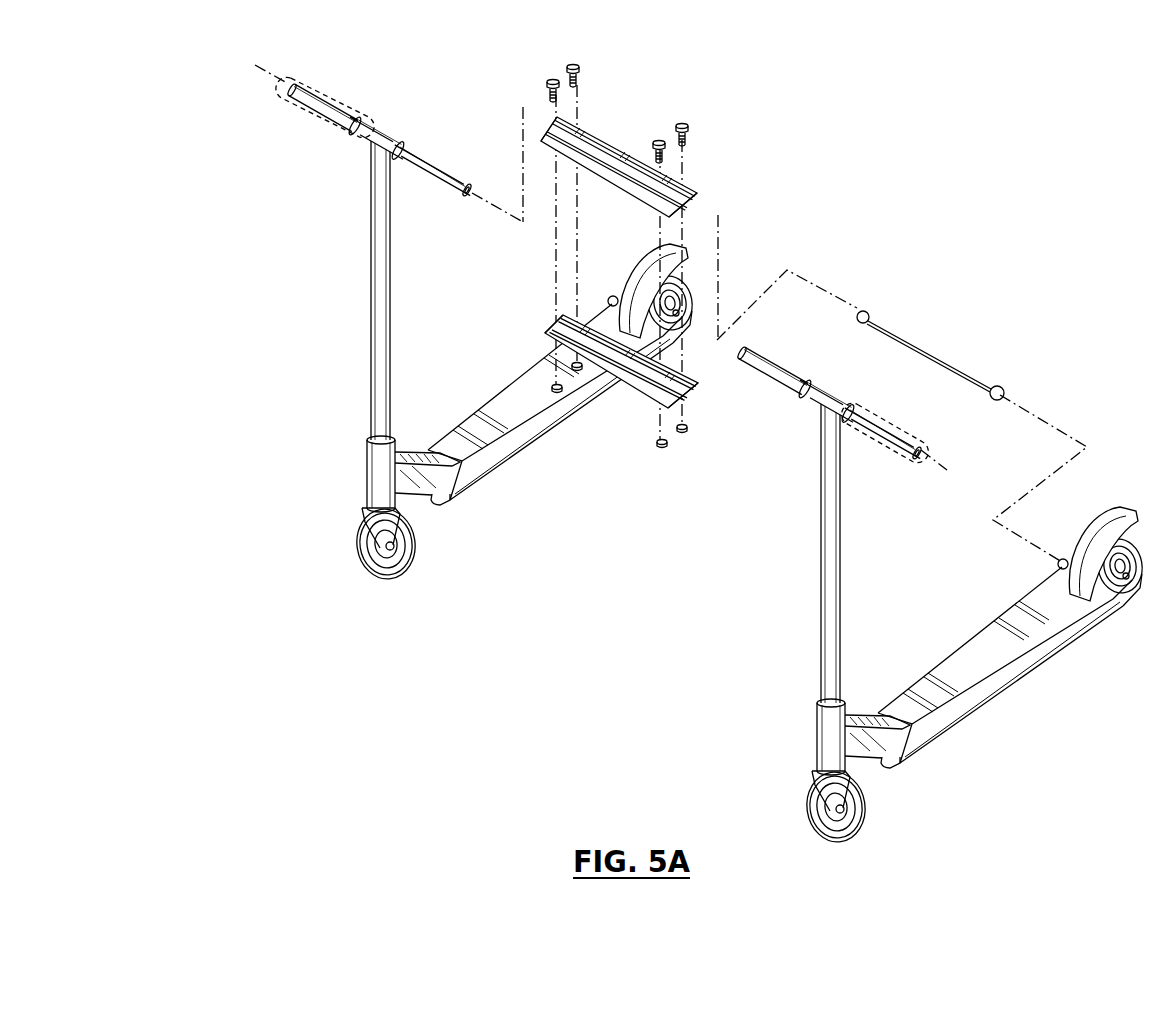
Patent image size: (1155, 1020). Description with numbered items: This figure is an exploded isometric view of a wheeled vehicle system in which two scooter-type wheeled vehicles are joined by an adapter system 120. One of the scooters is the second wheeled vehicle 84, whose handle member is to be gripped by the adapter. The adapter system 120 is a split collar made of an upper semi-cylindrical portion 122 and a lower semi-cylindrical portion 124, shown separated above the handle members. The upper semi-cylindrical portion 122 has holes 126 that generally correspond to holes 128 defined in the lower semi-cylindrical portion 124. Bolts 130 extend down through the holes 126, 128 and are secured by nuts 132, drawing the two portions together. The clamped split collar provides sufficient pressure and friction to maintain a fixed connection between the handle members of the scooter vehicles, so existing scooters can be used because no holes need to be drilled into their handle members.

The adapter system 120 is at (797, 104).
The second wheeled vehicle 84 is at (1018, 685).
The upper semi-cylindrical portion 122 is at (607, 183).
The lower semi-cylindrical portion 124 is at (627, 388).
The holes 126 is at (552, 118).
The holes 128 is at (565, 318).
The bolts 130 is at (568, 66).
The nuts 132 is at (552, 386).